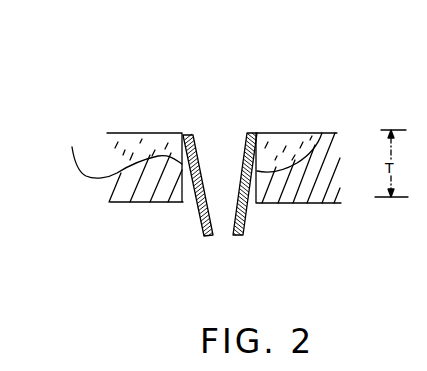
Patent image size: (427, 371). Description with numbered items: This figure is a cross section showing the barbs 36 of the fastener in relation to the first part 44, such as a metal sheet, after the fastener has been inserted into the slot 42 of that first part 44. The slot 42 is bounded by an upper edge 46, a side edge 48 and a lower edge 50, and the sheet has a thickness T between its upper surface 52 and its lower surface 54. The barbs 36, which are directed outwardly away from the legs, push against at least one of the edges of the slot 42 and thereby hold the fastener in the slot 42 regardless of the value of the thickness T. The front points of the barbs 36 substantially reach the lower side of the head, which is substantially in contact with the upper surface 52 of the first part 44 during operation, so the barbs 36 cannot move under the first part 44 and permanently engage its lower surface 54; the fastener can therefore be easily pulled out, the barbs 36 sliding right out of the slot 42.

The barbs 36 is at (198, 207).
The slot 42 is at (217, 170).
The first part 44 is at (299, 147).
The upper edge 46 is at (182, 133).
The side edge 48 is at (363, 93).
The lower edge 50 is at (183, 203).
The upper surface 52 is at (138, 133).
The lower surface 54 is at (183, 203).